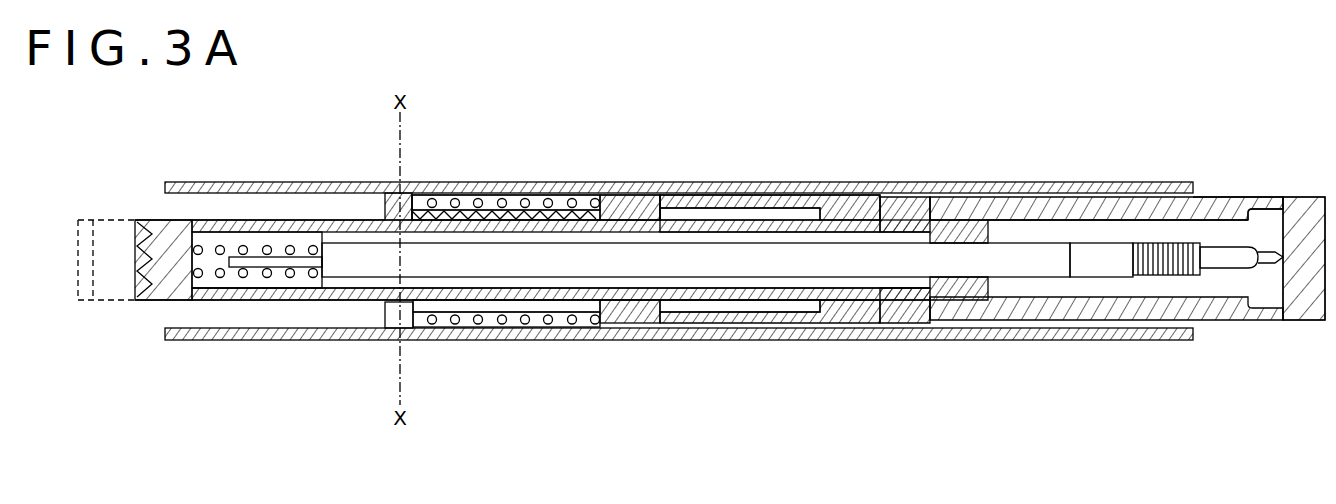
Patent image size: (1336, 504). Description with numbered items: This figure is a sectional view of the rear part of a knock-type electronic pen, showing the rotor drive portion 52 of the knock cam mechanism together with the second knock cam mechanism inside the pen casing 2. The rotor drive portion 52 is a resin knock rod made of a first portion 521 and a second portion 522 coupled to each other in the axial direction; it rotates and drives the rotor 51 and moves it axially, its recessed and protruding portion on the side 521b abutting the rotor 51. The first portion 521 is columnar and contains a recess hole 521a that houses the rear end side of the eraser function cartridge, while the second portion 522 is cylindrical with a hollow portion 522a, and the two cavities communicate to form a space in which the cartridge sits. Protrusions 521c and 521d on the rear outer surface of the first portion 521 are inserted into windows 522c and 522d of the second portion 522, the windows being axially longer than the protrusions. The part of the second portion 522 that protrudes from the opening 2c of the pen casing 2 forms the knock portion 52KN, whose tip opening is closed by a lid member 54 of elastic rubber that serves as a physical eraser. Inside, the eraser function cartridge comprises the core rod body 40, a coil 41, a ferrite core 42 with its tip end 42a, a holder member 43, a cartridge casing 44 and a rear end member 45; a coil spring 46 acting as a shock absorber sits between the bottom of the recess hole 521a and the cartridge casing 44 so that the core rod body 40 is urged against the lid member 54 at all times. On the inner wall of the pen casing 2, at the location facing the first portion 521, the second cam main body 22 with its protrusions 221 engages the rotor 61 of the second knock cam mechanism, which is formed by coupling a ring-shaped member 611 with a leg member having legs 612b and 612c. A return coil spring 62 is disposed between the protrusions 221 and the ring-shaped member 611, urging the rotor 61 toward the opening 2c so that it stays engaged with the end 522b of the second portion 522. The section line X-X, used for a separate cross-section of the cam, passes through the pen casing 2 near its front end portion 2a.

The pen casing 2 is at (1012, 205).
The front end portion of body 2a is at (234, 212).
The opening 2c is at (1197, 193).
The second cam main body 22 is at (400, 183).
The protrusions 221 is at (392, 210).
The core rod body 40 is at (1288, 260).
The coil 41 is at (1170, 266).
The ferrite core 42 is at (1228, 265).
The pin tip 42a is at (1268, 256).
The holder member 43 is at (1110, 263).
The cartridge casing 44 is at (1035, 262).
The rear end member 45 is at (305, 262).
The coil spring 46 is at (245, 270).
The rotor 51 is at (110, 290).
The rotor drive portion 52 is at (857, 134).
The first portion 521 is at (765, 226).
The recess hole 521a is at (568, 286).
The side 521b is at (162, 290).
The protrusion 521c is at (908, 224).
The protrusion 521d is at (908, 303).
The second portion 522 is at (804, 202).
The hollow portion 522a is at (1057, 230).
The end 522b is at (718, 212).
The window 522c is at (936, 215).
The window 522d is at (935, 313).
The knock portion 52KN is at (1248, 212).
The lid member 54 is at (1292, 212).
The rotor 61 is at (717, 90).
The ring-shaped member 611 is at (678, 214).
The leg 612b is at (585, 214).
The leg 612c is at (493, 305).
The coil spring 62 is at (524, 205).